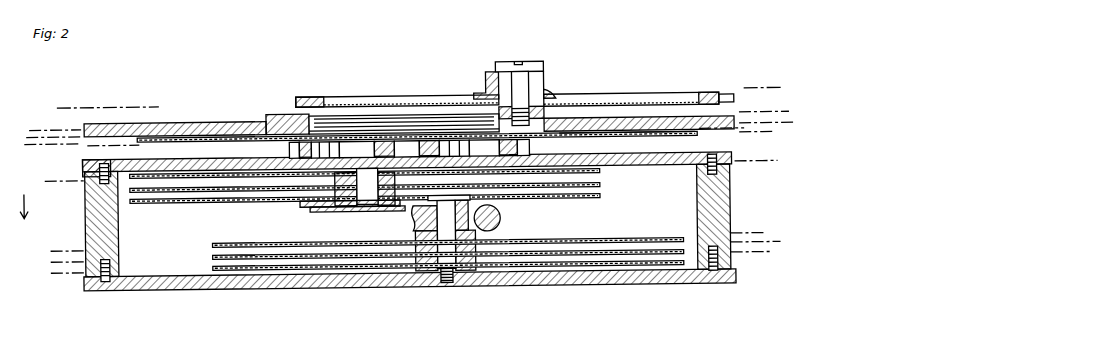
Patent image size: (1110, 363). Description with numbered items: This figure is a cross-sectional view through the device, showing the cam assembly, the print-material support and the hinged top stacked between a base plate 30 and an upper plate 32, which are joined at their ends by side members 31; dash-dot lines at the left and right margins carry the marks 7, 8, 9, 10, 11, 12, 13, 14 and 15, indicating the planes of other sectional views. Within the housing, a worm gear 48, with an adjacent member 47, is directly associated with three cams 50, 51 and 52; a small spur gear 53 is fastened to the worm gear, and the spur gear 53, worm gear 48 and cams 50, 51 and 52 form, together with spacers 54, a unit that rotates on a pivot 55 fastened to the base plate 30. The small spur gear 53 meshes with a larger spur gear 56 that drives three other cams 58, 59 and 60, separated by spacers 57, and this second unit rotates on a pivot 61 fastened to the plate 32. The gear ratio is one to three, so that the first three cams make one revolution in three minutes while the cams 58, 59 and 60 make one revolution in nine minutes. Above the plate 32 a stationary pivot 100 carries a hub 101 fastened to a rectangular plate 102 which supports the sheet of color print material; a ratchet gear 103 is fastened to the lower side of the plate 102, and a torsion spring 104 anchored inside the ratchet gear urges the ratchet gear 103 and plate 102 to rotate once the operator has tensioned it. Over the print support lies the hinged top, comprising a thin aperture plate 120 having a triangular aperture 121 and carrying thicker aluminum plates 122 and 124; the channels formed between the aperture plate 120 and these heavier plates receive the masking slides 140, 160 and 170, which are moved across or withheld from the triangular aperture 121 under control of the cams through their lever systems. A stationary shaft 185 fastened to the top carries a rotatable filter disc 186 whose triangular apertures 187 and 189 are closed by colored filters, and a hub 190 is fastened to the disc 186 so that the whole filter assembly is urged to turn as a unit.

The section line 7 is at (420, 98).
The section line 8 is at (410, 116).
The section line 9 is at (409, 129).
The section line 10 is at (409, 144).
The section line 11 is at (62, 145).
The section line 12 is at (409, 171).
The section line 13 is at (407, 239).
The section line 14 is at (415, 251).
The section line 15 is at (410, 262).
The base plate 30 is at (297, 284).
The side wall 31 is at (728, 215).
The plate 32 is at (649, 158).
The roller 47 is at (500, 220).
The worm gear 48 is at (412, 219).
The cam 50 is at (213, 242).
The cam 51 is at (212, 255).
The cam 52 is at (212, 267).
The small spur gear 53 is at (475, 199).
The spacers 54 is at (430, 271).
The pivot 55 is at (468, 271).
The larger spur gear 56 is at (314, 207).
The spacers 57 is at (298, 200).
The cam 58 is at (605, 172).
The cam 59 is at (605, 186).
The cam 60 is at (599, 198).
The pivot 61 is at (365, 187).
The stationary pivot 100 is at (431, 148).
The hub 101 is at (375, 149).
The plate 102 is at (150, 139).
The ratchet gear 103 is at (300, 149).
The torsion spring 104 is at (525, 145).
The thin plate 120 is at (680, 134).
The triangular aperture 121 is at (380, 129).
The plate 122 is at (126, 128).
The plate 124 is at (650, 118).
The masking slide 140 is at (333, 122).
The masking slide 160 is at (345, 120).
The masking slide 170 is at (355, 126).
The stationary shaft 185 is at (518, 55).
The rotatable disc 186 is at (325, 96).
The triangular aperture 187 is at (420, 110).
The triangular aperture 189 is at (578, 99).
The hub 190 is at (545, 97).